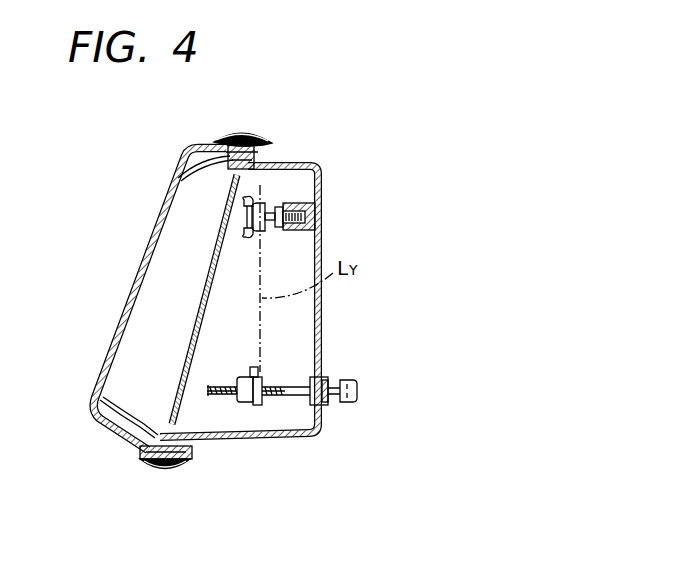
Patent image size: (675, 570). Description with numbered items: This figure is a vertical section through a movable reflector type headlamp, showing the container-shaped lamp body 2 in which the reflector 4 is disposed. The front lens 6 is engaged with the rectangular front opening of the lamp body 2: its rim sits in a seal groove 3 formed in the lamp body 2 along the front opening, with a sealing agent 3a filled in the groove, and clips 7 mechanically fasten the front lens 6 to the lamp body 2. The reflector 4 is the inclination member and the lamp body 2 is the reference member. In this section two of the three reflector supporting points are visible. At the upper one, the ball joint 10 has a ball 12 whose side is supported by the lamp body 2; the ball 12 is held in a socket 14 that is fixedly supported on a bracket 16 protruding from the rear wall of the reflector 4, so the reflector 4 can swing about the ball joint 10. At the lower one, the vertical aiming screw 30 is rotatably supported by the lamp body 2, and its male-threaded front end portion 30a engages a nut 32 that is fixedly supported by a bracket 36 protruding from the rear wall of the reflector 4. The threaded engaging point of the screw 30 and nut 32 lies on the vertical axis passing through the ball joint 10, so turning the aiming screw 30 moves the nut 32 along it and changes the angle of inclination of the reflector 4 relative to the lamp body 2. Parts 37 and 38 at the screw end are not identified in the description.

The lamp body 2 is at (320, 183).
The seal groove 3 is at (242, 133).
The sealing agent 3a is at (177, 170).
The reflector 4 is at (200, 327).
The front lens 6 is at (130, 277).
The clips 7 is at (250, 137).
The ball joint 10 is at (286, 202).
The ball 12 is at (258, 232).
The socket 14 is at (245, 233).
The bracket 16 is at (268, 196).
The vertical aiming screw 30 is at (291, 393).
The male-threaded front end portion 30a is at (283, 395).
The nut 32 is at (247, 402).
The bracket 36 is at (254, 405).
The flange 37 is at (322, 405).
The knob head 38 is at (355, 364).